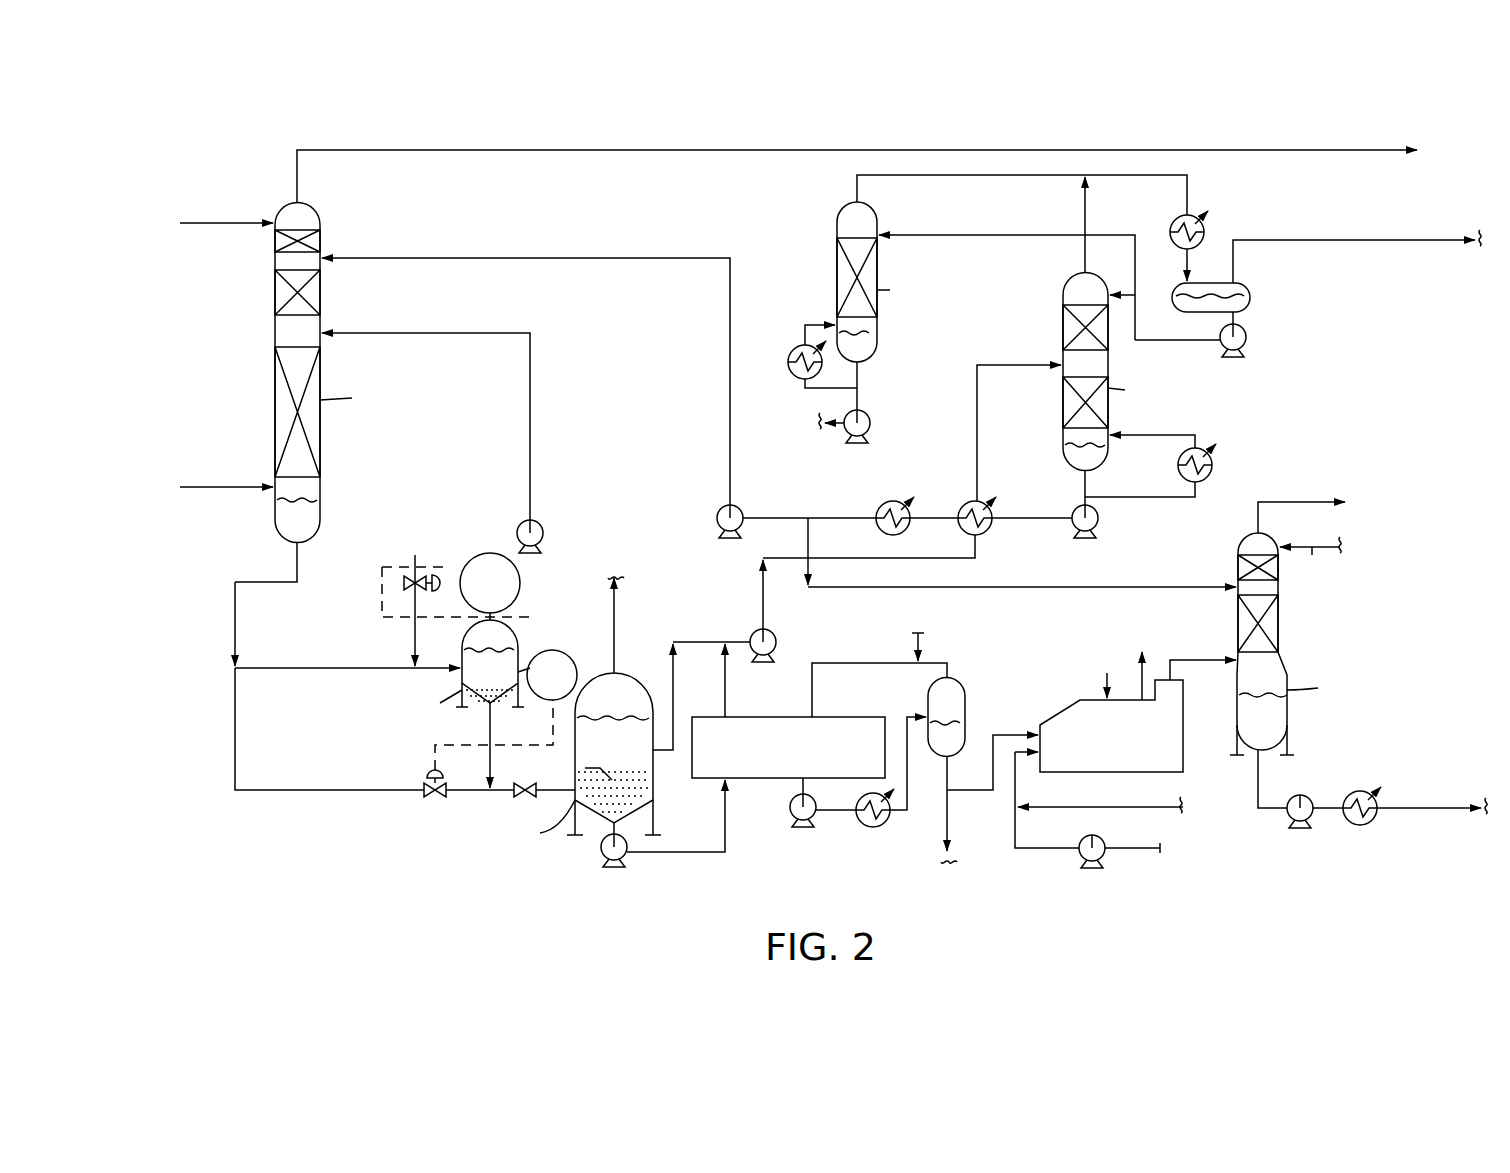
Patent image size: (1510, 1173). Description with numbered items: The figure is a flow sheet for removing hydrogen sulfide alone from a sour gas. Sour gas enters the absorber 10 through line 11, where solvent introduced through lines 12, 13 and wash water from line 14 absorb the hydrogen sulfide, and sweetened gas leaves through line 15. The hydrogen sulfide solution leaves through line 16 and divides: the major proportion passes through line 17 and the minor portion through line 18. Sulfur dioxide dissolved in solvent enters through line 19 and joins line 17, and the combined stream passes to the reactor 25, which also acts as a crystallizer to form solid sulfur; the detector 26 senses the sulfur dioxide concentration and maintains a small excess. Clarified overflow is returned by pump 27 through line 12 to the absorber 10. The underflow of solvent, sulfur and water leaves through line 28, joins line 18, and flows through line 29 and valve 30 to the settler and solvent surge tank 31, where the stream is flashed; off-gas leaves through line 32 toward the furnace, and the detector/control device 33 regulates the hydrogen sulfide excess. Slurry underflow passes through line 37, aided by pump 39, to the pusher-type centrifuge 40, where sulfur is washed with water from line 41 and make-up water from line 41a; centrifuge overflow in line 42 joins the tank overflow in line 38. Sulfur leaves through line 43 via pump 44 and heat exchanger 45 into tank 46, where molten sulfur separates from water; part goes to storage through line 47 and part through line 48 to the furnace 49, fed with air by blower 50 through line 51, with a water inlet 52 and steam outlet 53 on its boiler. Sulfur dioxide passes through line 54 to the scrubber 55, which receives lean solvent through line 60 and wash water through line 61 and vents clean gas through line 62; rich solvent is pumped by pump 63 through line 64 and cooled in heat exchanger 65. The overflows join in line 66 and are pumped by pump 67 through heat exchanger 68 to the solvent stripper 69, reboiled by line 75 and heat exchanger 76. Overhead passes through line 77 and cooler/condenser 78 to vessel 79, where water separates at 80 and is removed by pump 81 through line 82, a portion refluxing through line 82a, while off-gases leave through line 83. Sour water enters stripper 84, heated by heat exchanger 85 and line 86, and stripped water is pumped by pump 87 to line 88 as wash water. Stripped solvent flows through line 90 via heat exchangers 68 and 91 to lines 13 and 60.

The absorber 10 is at (275, 408).
The line 11 is at (238, 490).
The line 12 is at (530, 373).
The line 13 is at (595, 258).
The line 14 is at (188, 224).
The line 15 is at (432, 150).
The line 16 is at (300, 560).
The line 17 is at (290, 668).
The line 18 is at (235, 718).
The line 19 is at (415, 556).
The reactor 25 is at (462, 644).
The detector 26 is at (382, 588).
The pump 27 is at (540, 521).
The line 28 is at (489, 727).
The line 29 is at (490, 794).
The valve 30 is at (515, 797).
The settler and solvent surge tank 31 is at (653, 790).
The line 32 is at (614, 625).
The detector/control device 33 is at (432, 745).
The line 37 is at (660, 852).
The line 38 is at (690, 642).
The pump 39 is at (601, 851).
The pusher-type centrifuge 40 is at (748, 717).
The line 41 is at (820, 663).
The line 41a is at (920, 645).
The line 42 is at (725, 682).
The line 43 is at (820, 812).
The pump 44 is at (789, 812).
The heat exchanger 45 is at (890, 818).
The tank 46 is at (962, 685).
The line 47 is at (949, 820).
The line 48 is at (993, 778).
The furnace 49 is at (1183, 755).
The blower 50 is at (1080, 858).
The line 51 is at (1133, 850).
The water inlet 52 is at (1107, 682).
The steam outlet 53 is at (1142, 670).
The line 54 is at (1190, 662).
The sulfur dioxide scrubber/absorber 55 is at (1278, 642).
The line 60 is at (988, 589).
The line 61 is at (1345, 556).
The line 62 is at (1295, 502).
The pump 63 is at (1305, 795).
The line 64 is at (1262, 790).
The heat exchanger 65 is at (1368, 793).
The line 66 is at (763, 600).
The pump 67 is at (772, 633).
The heat exchanger 68 is at (985, 502).
The solvent stripper 69 is at (1063, 395).
The line 75 is at (1165, 498).
The heat exchanger 76 is at (1212, 470).
The line 77 is at (1085, 210).
The cooler/condenser 78 is at (1172, 225).
The vessel 79 is at (1250, 300).
The water separation 80 is at (1235, 310).
The pump 81 is at (1246, 340).
The line 82 is at (1020, 236).
The line 82a is at (1125, 292).
The line 83 is at (1445, 248).
The stripper 84 is at (837, 290).
The heat exchanger 85 is at (790, 370).
The line 86 is at (800, 390).
The pump 87 is at (870, 420).
The line 88 is at (830, 432).
The line 90 is at (1020, 520).
The heat exchanger 91 is at (893, 500).